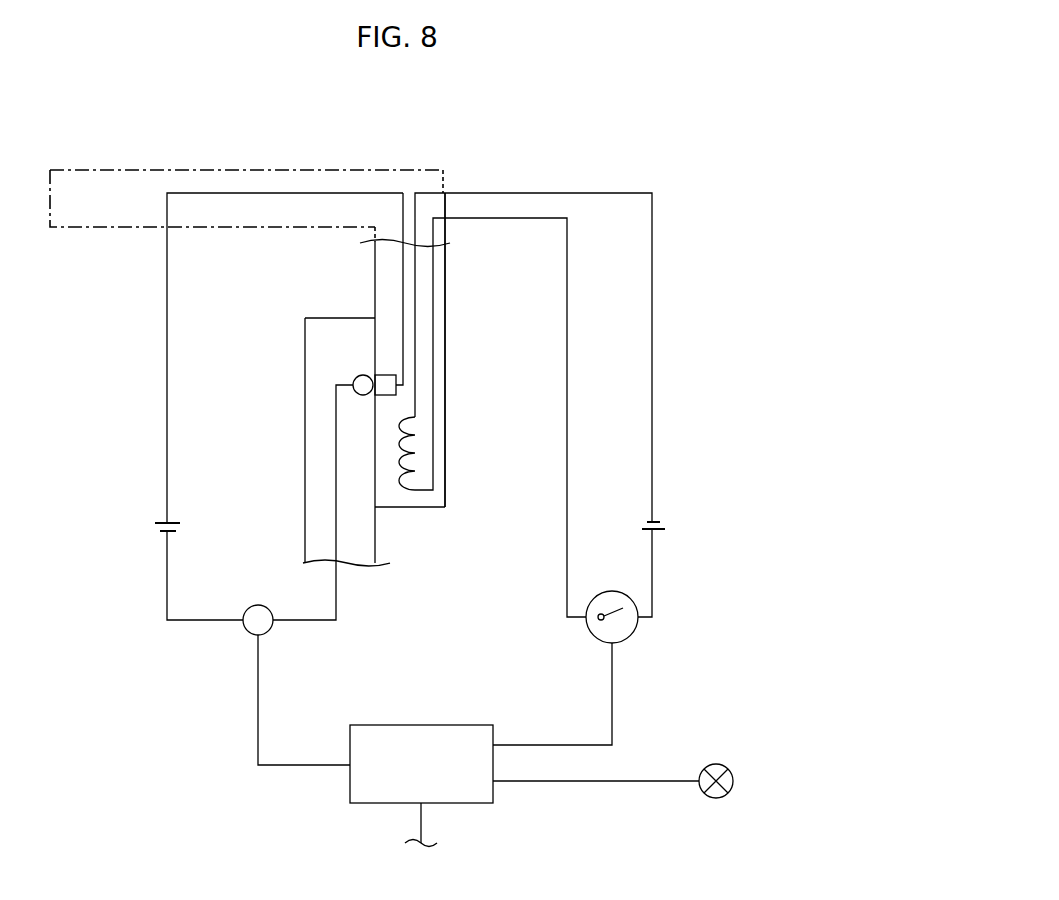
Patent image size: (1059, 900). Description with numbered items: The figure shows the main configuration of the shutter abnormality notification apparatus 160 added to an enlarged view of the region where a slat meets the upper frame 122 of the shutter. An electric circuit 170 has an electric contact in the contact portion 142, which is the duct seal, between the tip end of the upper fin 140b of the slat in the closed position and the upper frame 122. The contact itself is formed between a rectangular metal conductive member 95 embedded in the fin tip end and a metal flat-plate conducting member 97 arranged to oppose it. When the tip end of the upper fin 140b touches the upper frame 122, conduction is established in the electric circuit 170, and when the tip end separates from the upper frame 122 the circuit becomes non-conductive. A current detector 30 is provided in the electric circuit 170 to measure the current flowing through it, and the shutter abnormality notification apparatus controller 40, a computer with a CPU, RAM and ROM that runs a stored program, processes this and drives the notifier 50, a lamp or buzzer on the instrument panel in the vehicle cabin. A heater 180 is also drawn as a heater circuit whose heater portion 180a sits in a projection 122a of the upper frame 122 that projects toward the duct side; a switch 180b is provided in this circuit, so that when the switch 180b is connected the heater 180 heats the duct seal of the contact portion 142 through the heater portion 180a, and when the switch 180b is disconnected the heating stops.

The upper frame 122 is at (280, 168).
The projection 122a is at (447, 328).
The electric circuit 170 is at (167, 357).
The current detector 30 is at (270, 631).
The upper fin 140b is at (305, 400).
The contact portion 142 is at (388, 523).
The conductive member 95 is at (358, 376).
The conducting member 97 is at (388, 374).
The heater 180 is at (654, 401).
The heater portion 180a is at (400, 450).
The switch 180b is at (631, 637).
The shutter abnormality notification apparatus controller 40 is at (437, 724).
The shutter abnormality notification apparatus 160 is at (316, 796).
The notifier 50 is at (729, 793).